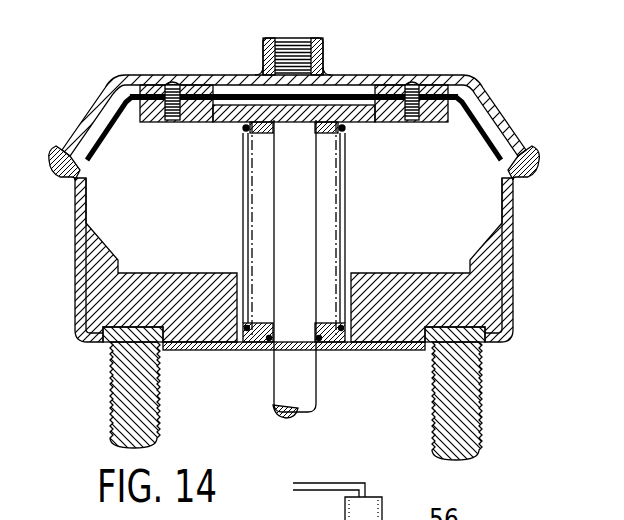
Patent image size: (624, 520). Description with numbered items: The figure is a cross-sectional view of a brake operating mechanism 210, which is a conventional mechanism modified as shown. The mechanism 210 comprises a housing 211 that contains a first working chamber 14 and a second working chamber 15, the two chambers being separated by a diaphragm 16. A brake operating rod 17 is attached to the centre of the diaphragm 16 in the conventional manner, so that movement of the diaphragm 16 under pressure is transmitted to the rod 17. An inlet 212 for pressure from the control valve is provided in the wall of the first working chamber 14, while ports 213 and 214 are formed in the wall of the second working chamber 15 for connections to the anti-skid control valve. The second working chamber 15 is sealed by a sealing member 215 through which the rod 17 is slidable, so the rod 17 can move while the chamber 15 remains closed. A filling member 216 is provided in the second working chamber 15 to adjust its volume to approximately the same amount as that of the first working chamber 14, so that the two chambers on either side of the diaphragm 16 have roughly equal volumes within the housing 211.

The first working chamber 14 is at (117, 84).
The second working chamber 15 is at (108, 184).
The diaphragm 16 is at (97, 153).
The brake operating rod 17 is at (294, 269).
The mechanism 210 is at (409, 76).
The housing 211 is at (496, 134).
The inlet 212 is at (293, 40).
The port 213 is at (421, 208).
The port 214 is at (174, 208).
The sealing member 215 is at (336, 346).
The filling member 216 is at (206, 325).